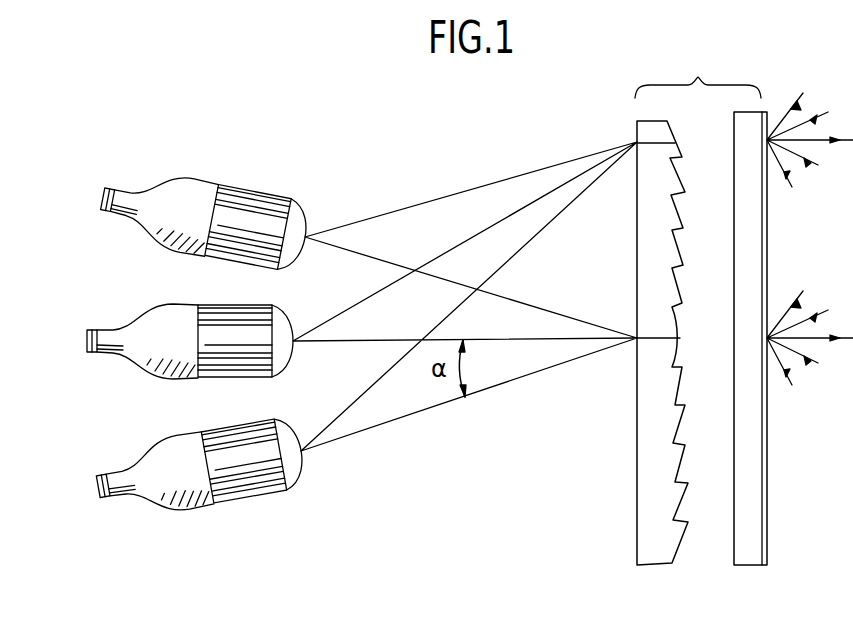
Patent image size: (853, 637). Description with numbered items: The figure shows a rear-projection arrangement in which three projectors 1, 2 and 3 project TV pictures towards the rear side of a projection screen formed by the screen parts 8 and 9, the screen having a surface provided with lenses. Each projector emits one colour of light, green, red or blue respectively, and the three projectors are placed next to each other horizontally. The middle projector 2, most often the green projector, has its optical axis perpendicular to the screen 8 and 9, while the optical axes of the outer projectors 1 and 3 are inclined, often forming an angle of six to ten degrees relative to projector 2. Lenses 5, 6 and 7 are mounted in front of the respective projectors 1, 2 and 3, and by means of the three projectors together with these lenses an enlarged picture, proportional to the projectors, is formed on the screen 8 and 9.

The projector 1 is at (107, 508).
The projector 2 is at (94, 355).
The projector 3 is at (104, 217).
The lens 5 is at (273, 478).
The lens 6 is at (266, 360).
The lens 7 is at (274, 213).
The projection screen 8 is at (652, 548).
The projection screen 9 is at (744, 553).